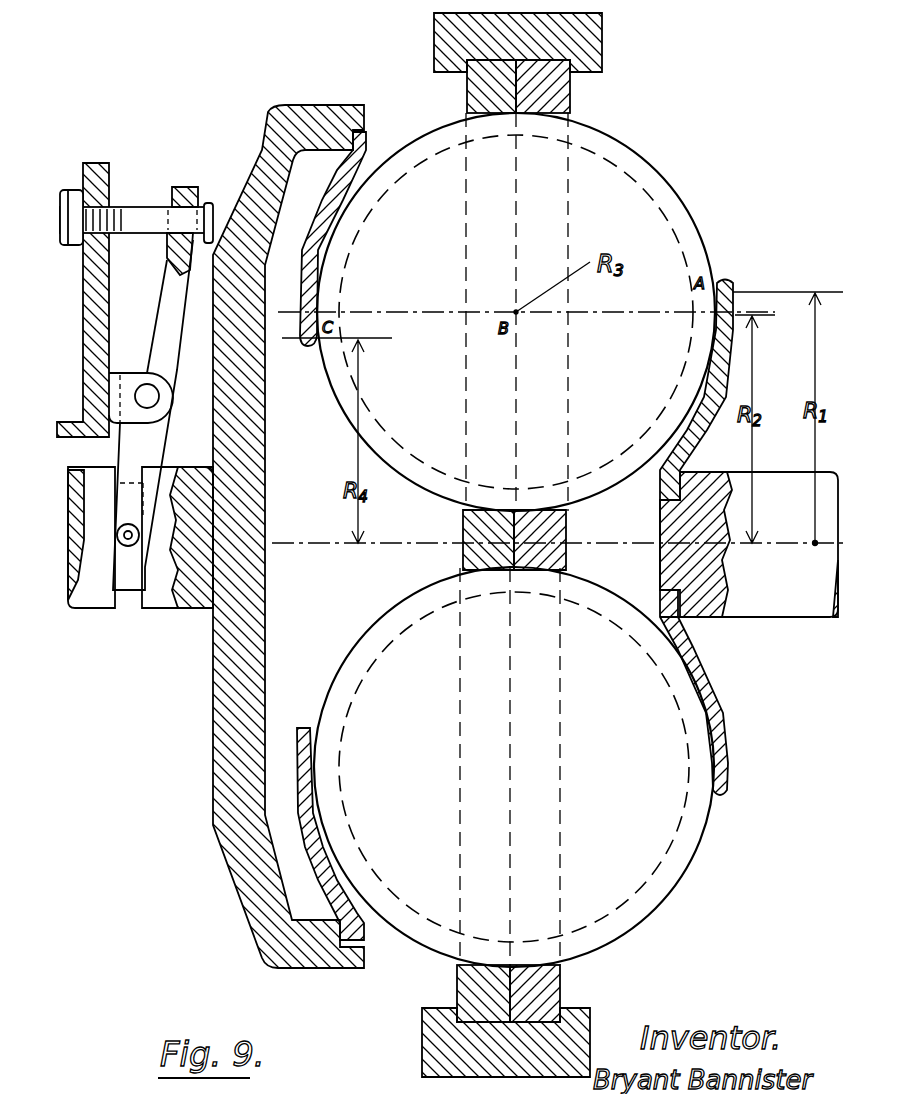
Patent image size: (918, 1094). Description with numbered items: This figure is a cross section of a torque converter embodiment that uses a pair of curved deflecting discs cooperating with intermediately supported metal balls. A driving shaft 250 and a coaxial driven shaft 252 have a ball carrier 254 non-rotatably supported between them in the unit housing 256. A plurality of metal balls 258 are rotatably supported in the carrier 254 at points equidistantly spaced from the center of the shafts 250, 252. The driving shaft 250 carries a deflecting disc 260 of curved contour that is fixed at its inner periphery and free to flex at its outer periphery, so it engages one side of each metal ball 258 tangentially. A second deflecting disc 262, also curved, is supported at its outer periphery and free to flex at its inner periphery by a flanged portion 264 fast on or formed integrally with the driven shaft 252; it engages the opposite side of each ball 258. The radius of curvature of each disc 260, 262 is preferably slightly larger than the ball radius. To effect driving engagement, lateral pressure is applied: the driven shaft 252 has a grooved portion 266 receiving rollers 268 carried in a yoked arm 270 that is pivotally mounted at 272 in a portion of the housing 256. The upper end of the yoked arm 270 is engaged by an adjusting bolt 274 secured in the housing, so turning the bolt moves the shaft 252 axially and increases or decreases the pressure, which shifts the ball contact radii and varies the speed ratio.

The driving shaft 250 is at (760, 618).
The driven shaft 252 is at (165, 608).
The ball carrier 254 is at (572, 98).
The unit housing 256 is at (603, 39).
The metal balls 258 is at (675, 190).
The deflecting disc 260 is at (733, 281).
The second deflecting disc 262 is at (335, 207).
The flanged portion 264 is at (302, 104).
The grooved portion 266 is at (130, 595).
The rollers 268 is at (112, 577).
The yoked arm 270 is at (160, 307).
The pivot 272 is at (147, 384).
The adjusting bolt 274 is at (150, 207).